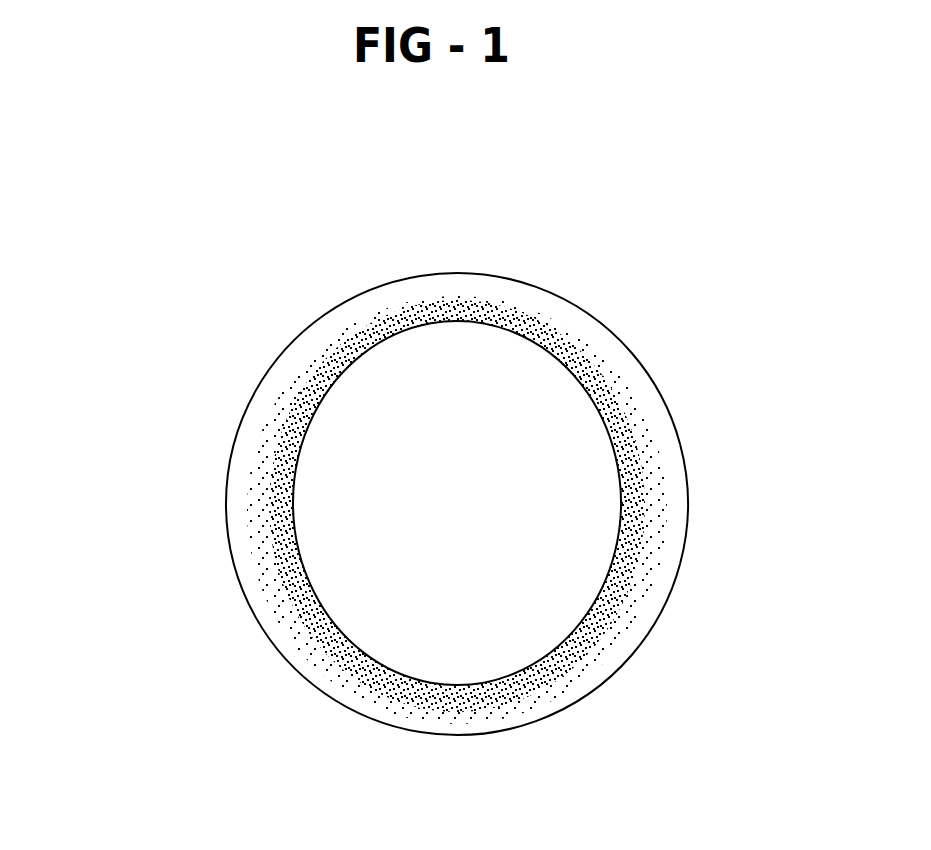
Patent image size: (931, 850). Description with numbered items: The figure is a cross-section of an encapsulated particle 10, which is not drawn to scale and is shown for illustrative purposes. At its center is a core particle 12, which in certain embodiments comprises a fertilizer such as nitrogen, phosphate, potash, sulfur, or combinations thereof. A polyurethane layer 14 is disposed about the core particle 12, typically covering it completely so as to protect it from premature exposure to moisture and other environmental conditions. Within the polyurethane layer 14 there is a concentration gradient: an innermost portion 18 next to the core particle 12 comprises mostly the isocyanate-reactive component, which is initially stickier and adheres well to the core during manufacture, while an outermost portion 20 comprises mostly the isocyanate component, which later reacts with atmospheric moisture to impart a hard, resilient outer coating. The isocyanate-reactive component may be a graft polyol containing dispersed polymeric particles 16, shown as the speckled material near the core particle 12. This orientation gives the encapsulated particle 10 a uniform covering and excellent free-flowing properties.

The encapsulated particle 10 is at (440, 449).
The core particle 12 is at (381, 476).
The polyurethane layer 14 is at (440, 468).
The polymeric particles 16 is at (457, 443).
The innermost portion 18 is at (701, 483).
The outermost portion 20 is at (753, 504).